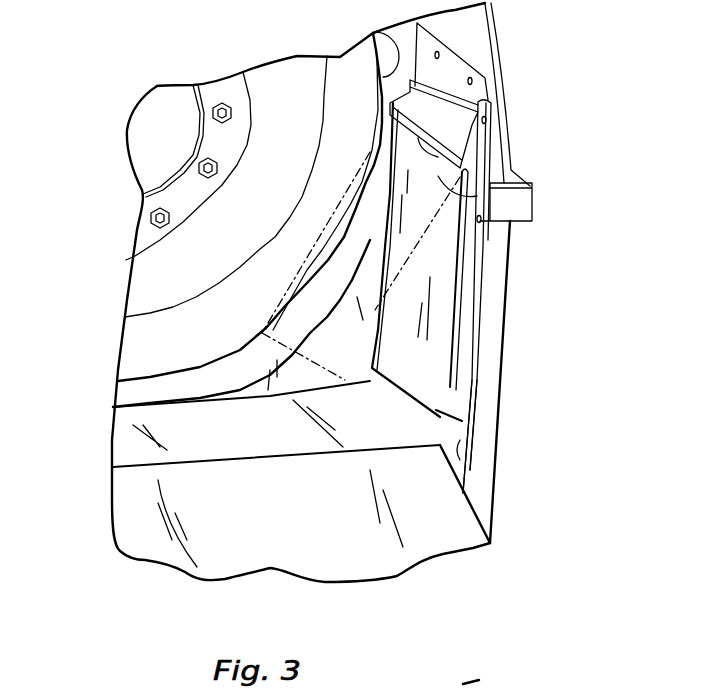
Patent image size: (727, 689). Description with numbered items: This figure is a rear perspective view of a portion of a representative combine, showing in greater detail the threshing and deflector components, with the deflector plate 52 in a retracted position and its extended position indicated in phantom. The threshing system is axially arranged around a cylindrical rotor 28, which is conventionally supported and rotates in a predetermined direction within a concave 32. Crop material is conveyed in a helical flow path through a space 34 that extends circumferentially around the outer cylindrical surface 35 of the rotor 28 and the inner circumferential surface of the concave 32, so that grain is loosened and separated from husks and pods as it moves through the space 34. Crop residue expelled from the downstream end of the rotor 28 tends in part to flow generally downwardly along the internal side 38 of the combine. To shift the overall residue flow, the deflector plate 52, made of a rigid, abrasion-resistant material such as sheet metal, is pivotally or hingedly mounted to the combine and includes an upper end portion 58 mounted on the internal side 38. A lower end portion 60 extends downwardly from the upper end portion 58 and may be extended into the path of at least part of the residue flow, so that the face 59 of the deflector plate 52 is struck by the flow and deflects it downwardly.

The cylindrical rotor 28 is at (155, 290).
The concave 32 is at (249, 377).
The space 34 is at (142, 395).
The outer cylindrical surface 35 is at (368, 35).
The internal side 38 is at (462, 457).
The deflector plate 52 is at (437, 263).
The upper end portion 58 is at (493, 189).
The face 59 is at (397, 317).
The lower end portion 60 is at (447, 400).